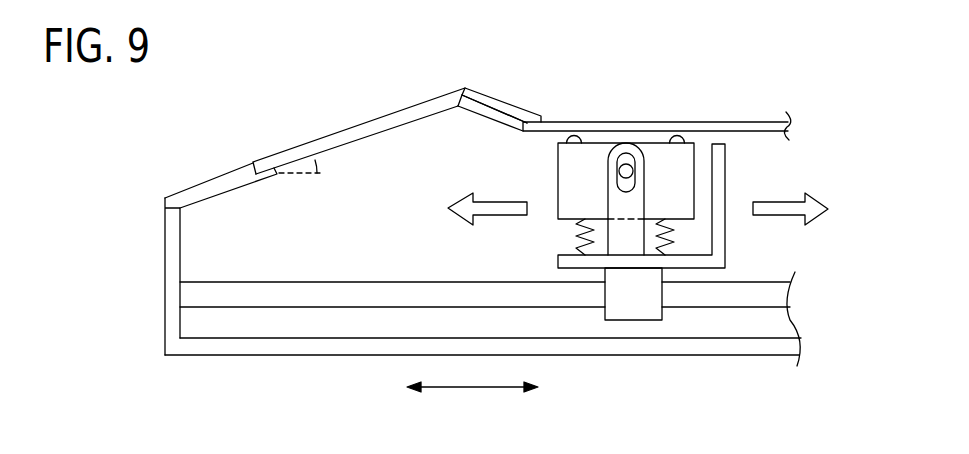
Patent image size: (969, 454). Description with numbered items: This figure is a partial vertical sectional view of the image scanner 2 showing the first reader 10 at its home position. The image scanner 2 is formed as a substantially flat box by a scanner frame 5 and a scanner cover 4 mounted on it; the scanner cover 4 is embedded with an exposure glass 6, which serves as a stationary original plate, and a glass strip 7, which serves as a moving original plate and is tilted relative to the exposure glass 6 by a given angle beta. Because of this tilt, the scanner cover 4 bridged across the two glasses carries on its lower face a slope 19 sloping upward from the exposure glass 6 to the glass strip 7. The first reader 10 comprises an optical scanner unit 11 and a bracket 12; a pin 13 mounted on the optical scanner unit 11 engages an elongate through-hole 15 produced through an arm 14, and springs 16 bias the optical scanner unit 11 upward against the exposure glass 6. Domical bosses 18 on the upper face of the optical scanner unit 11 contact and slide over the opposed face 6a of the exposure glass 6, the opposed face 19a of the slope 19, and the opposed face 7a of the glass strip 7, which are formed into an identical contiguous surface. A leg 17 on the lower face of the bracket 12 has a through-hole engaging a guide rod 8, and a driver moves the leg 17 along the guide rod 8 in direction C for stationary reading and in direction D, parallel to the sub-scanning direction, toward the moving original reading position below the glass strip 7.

The image scanner 2 is at (818, 139).
The scanner cover 4 is at (217, 188).
The scanner frame 5 is at (165, 260).
The exposure glass 6 is at (747, 121).
The opposed face of the exposure glass 6a is at (735, 132).
The glass strip 7 is at (363, 129).
The opposed face of the glass strip 7a is at (396, 131).
The guide rod 8 is at (760, 285).
The first reader 10 is at (732, 184).
The optical scanner unit 11 is at (654, 158).
The bracket 12 is at (726, 228).
The pin 13 is at (618, 160).
The arm 14 is at (625, 145).
The elongate through-hole 15 is at (608, 147).
The spring 16 is at (574, 232).
The leg 17 is at (635, 308).
The domical boss 18 is at (681, 136).
The slope 19 is at (485, 103).
The opposed face of the slope 19a is at (493, 128).